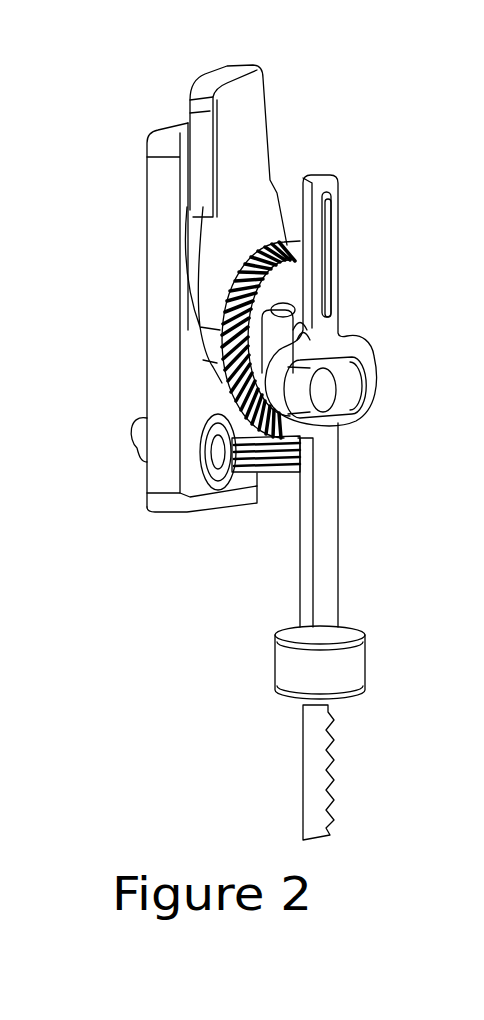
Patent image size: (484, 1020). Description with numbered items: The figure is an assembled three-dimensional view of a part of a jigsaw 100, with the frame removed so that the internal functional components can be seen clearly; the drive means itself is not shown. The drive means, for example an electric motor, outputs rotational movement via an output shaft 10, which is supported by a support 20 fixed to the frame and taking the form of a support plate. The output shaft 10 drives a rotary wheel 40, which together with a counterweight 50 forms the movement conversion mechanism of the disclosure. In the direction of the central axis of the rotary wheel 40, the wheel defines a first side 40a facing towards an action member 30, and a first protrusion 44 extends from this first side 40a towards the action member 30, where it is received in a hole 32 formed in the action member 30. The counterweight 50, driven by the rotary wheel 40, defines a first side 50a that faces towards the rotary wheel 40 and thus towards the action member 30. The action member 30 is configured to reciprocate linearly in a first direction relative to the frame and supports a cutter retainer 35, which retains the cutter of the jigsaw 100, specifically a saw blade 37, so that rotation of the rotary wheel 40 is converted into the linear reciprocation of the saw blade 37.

The jigsaw 100 is at (100, 162).
The support 20 is at (157, 272).
The counterweight 50 is at (252, 138).
The first side of the counterweight 50a is at (232, 130).
The rotary wheel 40 is at (287, 243).
The first side of the rotary wheel 40a is at (240, 257).
The output shaft 10 is at (252, 462).
The action member 30 is at (328, 480).
The hole 32 is at (350, 382).
The first protrusion 44 is at (343, 408).
The cutter retainer 35 is at (358, 675).
The saw blade 37 is at (330, 803).